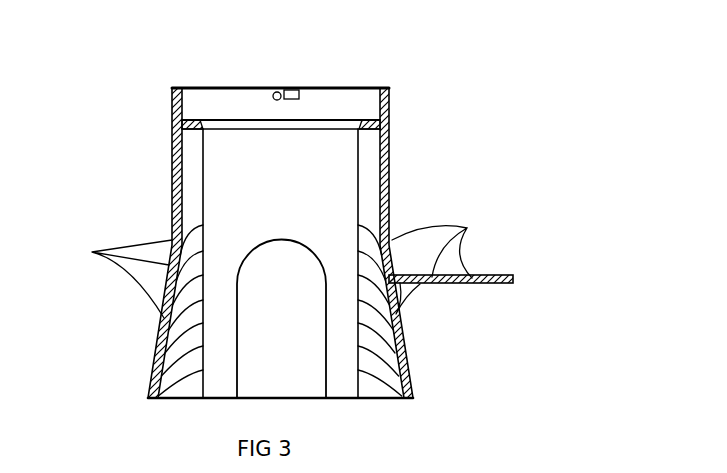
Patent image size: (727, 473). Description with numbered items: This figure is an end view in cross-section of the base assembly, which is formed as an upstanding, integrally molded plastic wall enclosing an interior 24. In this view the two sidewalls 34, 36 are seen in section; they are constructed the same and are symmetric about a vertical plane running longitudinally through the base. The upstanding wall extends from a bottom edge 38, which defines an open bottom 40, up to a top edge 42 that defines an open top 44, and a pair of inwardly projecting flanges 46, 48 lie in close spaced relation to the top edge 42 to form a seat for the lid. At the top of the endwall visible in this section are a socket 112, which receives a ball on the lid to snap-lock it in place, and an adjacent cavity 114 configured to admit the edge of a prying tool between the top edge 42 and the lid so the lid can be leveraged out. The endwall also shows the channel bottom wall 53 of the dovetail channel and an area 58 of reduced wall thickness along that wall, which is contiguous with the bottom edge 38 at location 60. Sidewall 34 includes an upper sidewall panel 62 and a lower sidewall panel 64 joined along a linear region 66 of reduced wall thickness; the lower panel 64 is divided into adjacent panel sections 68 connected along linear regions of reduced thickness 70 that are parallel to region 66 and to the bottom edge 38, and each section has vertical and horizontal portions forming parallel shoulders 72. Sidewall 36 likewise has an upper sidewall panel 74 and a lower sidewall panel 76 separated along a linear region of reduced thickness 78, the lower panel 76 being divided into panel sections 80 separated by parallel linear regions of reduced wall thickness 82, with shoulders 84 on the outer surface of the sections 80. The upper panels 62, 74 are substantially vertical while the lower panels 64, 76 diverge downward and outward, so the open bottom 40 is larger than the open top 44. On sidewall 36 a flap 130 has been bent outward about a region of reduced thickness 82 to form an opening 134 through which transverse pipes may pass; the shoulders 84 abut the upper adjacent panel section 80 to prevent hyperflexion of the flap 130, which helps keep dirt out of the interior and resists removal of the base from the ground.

The interior 24 is at (292, 185).
The sidewall 34 is at (172, 125).
The sidewall 36 is at (389, 142).
The bottom edge 38 is at (150, 400).
The open bottom 40 is at (392, 406).
The top edge 42 is at (172, 92).
The open top 44 is at (222, 64).
The inwardly projecting flange 46 is at (172, 100).
The inwardly projecting flange 48 is at (389, 108).
The channel bottom wall 53 is at (327, 100).
The area of reduced wall thickness 58 is at (270, 353).
The location 60 is at (318, 400).
The upper sidewall panel 62 is at (176, 175).
The lower sidewall panel 64 is at (163, 332).
The linear region of reduced wall thickness 66 is at (175, 236).
The panel sections 68 is at (195, 304).
The linear regions of reduced thickness 70 is at (197, 307).
The shoulders 72 is at (157, 360).
The upper sidewall panel 74 is at (389, 180).
The lower sidewall panel 76 is at (402, 337).
The linear region of reduced thickness 78 is at (392, 238).
The panel sections 80 is at (366, 304).
The linear regions of reduced wall thickness 82 is at (364, 307).
The shoulders 84 is at (405, 362).
The sockets 112 is at (277, 92).
The cavities 114 is at (290, 90).
The flap 130 is at (478, 284).
The opening 134 is at (428, 371).